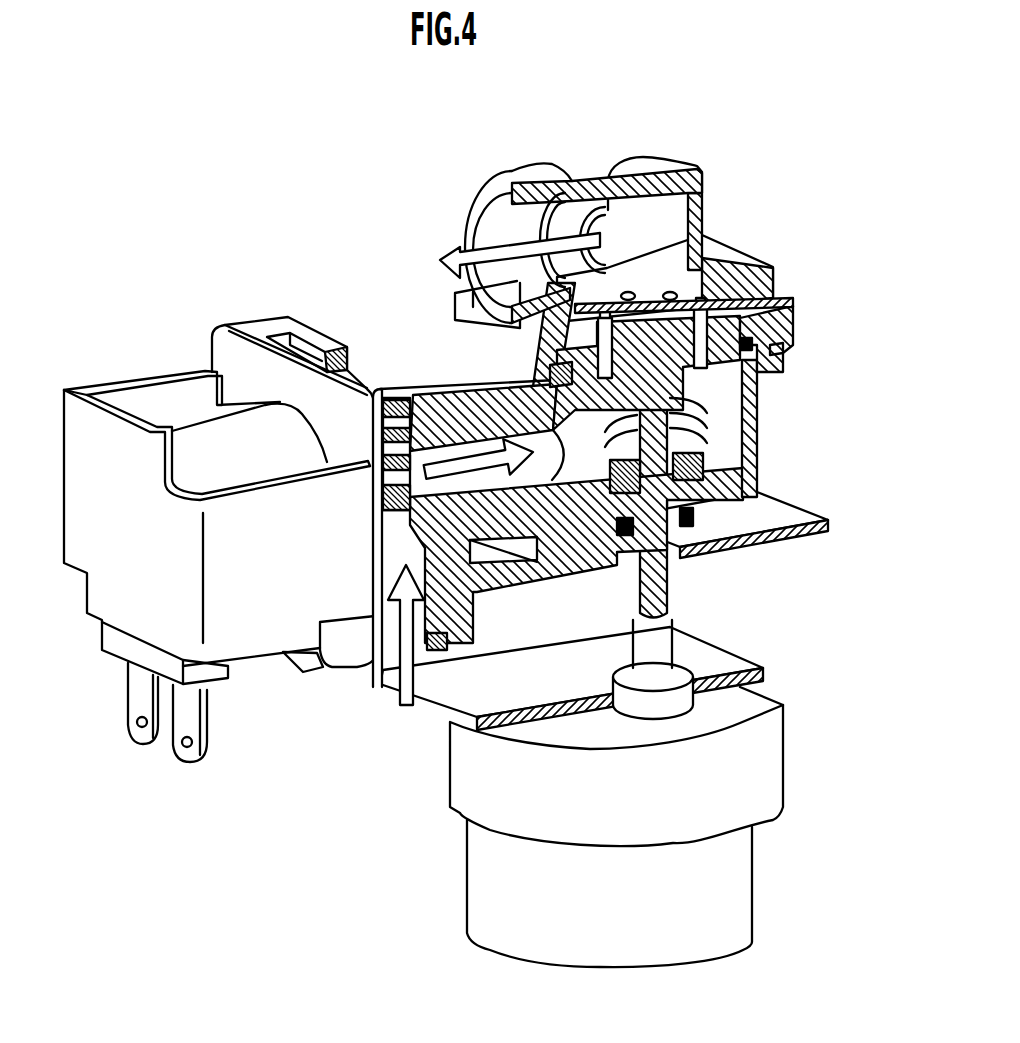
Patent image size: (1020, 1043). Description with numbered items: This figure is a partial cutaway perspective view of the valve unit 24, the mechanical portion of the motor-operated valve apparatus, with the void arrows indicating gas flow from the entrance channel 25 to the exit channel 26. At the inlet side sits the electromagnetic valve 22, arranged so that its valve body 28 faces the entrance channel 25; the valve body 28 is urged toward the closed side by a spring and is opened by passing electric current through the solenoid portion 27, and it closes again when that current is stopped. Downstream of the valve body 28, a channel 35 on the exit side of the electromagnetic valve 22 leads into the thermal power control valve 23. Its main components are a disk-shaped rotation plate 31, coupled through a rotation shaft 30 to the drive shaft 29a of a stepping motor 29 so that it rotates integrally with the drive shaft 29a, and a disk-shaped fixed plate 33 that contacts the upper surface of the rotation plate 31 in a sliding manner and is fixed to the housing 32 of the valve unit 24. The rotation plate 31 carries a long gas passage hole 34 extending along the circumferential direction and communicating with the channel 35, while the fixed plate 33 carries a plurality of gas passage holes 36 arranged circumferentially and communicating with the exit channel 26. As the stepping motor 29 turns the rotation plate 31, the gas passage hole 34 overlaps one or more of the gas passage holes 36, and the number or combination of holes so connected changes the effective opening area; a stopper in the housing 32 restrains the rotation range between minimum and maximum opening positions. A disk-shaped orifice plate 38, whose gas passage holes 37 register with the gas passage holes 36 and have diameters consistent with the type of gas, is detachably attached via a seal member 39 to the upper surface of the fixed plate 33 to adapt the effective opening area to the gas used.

The electromagnetic valve 22 is at (222, 307).
The thermal power control valve 23 is at (790, 235).
The valve unit 24 is at (338, 733).
The entrance channel 25 is at (447, 643).
The exit channel 26 is at (514, 212).
The solenoid portion 27 is at (185, 428).
The valve body 28 is at (397, 390).
The stepping motor 29 is at (748, 873).
The drive shaft 29a is at (660, 643).
The rotation shaft 30 is at (760, 482).
The rotation plate 31 is at (735, 378).
The housing 32 is at (783, 347).
The fixed plate 33 is at (790, 342).
The gas passage hole 34 is at (715, 405).
The channel 35 is at (455, 380).
The gas passage holes 36 is at (783, 327).
The gas passage holes 37 is at (678, 275).
The orifice plate 38 is at (655, 290).
The seal member 39 is at (768, 302).